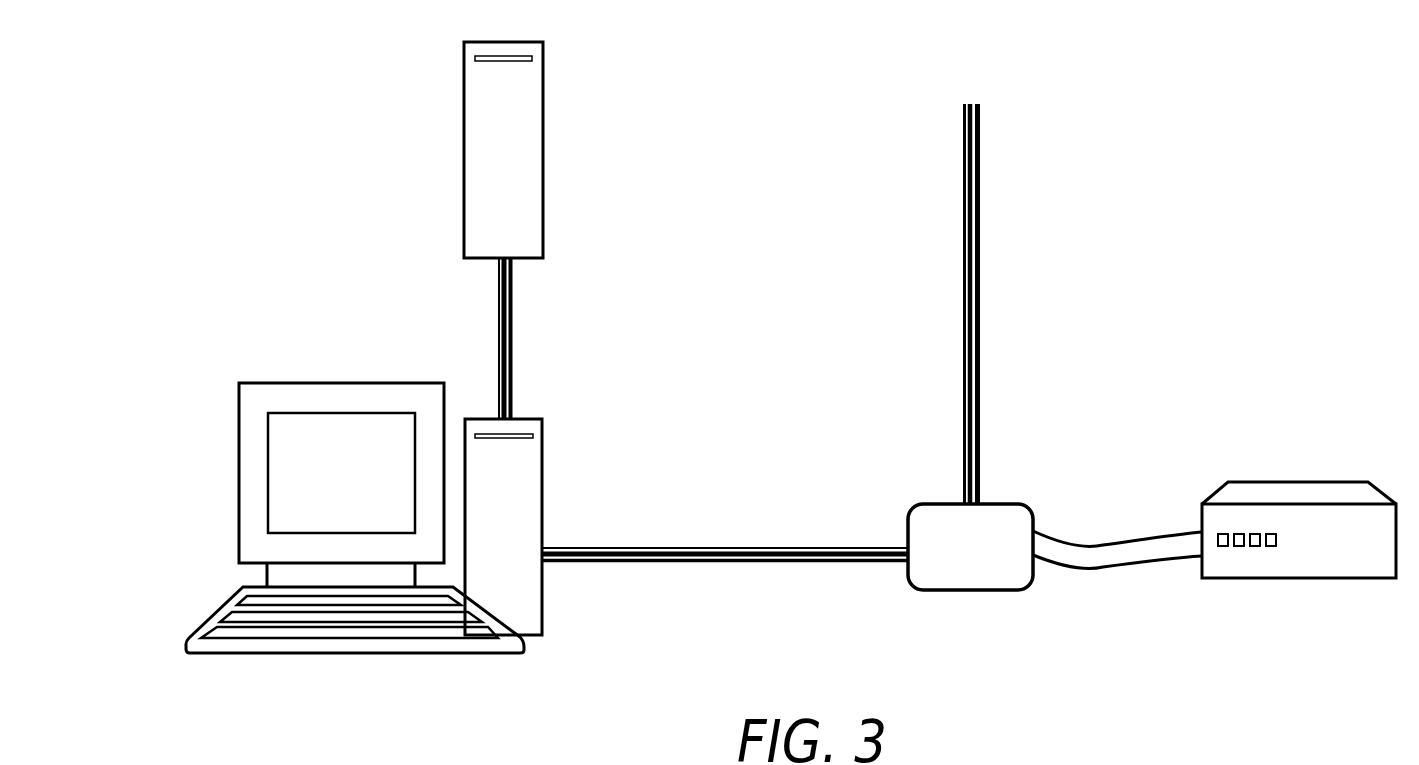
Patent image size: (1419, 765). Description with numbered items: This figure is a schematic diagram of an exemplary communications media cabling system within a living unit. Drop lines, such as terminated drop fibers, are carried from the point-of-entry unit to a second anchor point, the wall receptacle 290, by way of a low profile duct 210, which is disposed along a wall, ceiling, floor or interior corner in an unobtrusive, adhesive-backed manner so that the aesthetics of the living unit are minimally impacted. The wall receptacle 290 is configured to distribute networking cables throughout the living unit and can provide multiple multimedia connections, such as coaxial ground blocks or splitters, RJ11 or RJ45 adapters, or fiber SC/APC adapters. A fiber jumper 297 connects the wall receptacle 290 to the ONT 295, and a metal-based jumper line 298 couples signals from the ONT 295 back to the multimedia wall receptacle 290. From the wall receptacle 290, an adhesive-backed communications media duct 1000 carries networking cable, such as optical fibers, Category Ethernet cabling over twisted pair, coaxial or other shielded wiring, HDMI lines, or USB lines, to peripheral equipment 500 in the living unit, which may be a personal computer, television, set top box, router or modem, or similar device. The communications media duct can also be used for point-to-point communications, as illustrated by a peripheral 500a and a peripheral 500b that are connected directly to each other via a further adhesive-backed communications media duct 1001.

The peripheral equipment 500 is at (283, 245).
The peripheral 500a is at (292, 383).
The peripheral 500b is at (543, 172).
The adhesive-backed communications media duct 1001 is at (514, 326).
The communications media duct 1000 is at (712, 546).
The low profile duct 210 is at (980, 203).
The wall receptacle 290 is at (977, 592).
The fiber jumper 297 is at (1118, 540).
The metal-based jumper line 298 is at (1123, 567).
The ONT 295 is at (1312, 580).